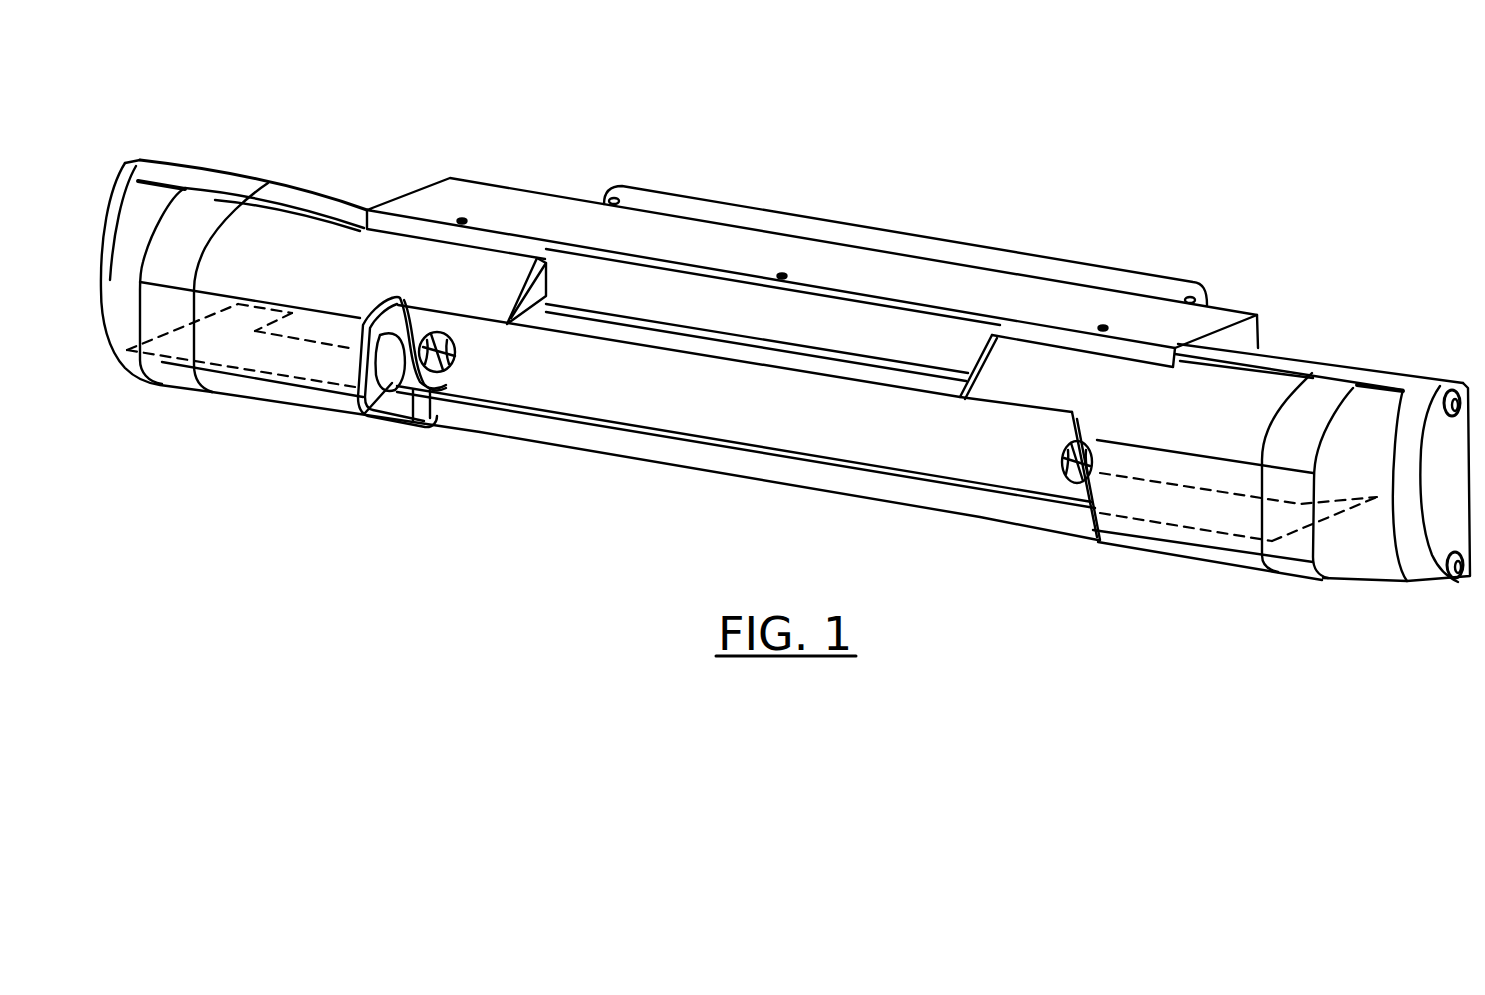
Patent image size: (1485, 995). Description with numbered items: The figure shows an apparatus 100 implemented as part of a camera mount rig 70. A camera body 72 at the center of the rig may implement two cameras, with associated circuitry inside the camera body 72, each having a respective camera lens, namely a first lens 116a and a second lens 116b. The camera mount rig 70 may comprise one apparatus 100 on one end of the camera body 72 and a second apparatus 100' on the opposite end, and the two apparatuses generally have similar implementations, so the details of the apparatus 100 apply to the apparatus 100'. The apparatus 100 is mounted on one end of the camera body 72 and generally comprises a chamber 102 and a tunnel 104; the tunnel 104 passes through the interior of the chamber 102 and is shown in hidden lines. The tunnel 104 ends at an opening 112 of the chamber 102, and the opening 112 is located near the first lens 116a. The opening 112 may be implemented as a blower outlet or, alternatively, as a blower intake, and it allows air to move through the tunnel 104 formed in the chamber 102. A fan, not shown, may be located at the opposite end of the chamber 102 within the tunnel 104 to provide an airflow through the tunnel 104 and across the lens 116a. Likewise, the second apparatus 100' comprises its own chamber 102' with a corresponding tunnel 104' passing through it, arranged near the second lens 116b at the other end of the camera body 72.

The camera mount rig 70 is at (785, 322).
The camera body 72 is at (700, 345).
The apparatus 100 is at (234, 259).
The second apparatus 100' is at (1387, 446).
The chamber 102 is at (619, 334).
The chamber 102' is at (1278, 425).
The tunnel 104 is at (241, 382).
The tunnel 104' is at (1238, 539).
The opening 112 is at (365, 405).
The first camera lens 116a is at (462, 357).
The second camera lens 116b is at (1058, 464).